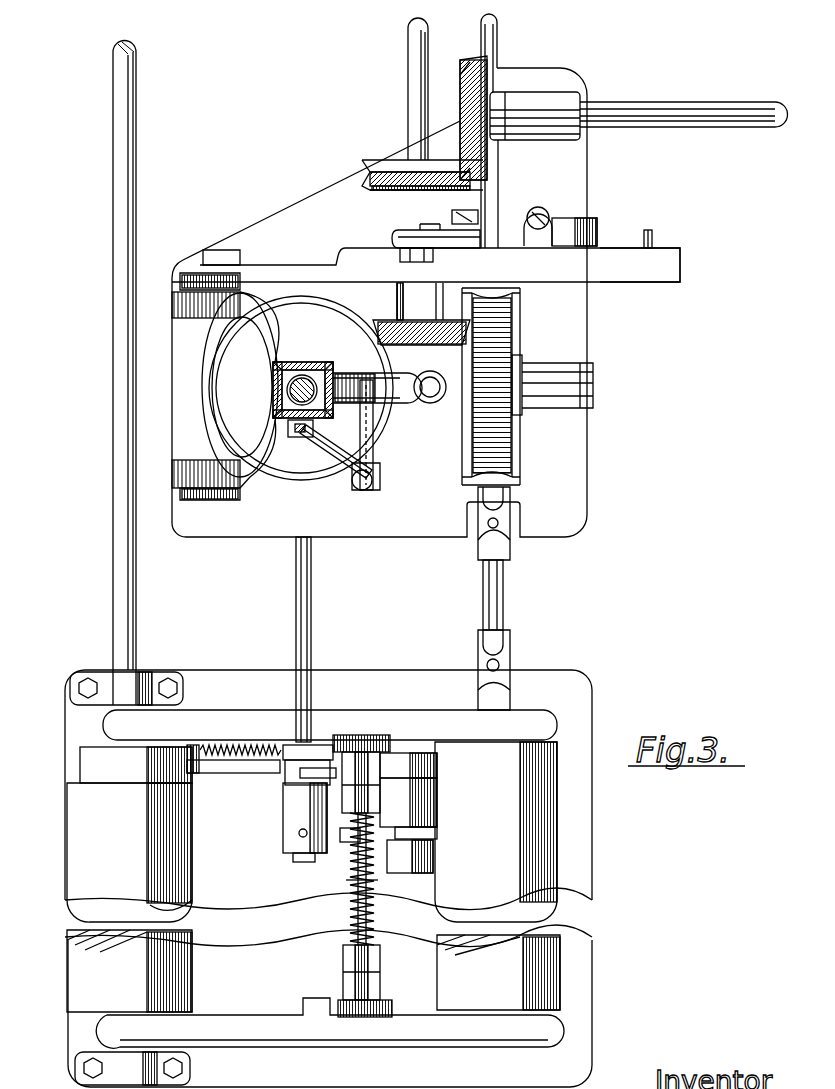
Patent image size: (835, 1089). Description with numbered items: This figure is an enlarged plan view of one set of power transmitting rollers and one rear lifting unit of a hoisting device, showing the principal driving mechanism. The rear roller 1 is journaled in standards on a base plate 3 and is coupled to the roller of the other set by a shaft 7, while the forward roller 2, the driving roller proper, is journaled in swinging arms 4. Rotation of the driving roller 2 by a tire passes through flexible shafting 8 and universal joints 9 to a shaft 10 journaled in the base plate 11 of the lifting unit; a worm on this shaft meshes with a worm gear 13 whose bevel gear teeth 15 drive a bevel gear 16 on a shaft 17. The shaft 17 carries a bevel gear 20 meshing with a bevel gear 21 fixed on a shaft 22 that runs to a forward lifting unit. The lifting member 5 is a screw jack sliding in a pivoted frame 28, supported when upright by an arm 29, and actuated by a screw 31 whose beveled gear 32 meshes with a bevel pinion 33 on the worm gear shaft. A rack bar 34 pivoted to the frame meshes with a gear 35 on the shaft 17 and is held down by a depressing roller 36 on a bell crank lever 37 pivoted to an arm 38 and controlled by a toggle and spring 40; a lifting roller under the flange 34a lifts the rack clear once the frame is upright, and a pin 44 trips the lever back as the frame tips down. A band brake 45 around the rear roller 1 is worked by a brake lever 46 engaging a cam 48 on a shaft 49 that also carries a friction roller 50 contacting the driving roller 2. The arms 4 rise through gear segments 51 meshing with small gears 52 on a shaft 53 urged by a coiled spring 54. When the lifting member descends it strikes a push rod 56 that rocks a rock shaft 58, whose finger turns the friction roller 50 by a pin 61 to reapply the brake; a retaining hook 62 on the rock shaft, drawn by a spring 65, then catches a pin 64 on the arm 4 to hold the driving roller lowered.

The rear roller 1 is at (105, 873).
The forward roller 2 is at (540, 855).
The base plate 3 is at (580, 990).
The swinging arms 4 is at (410, 720).
The lifting member 5 is at (280, 376).
The shaft 7 is at (113, 282).
The flexible shafting 8 is at (505, 600).
The universal joints 9 is at (510, 535).
The shaft 10 is at (497, 45).
The base plate 11 is at (565, 335).
The worm gear 13 is at (518, 450).
The bevel gear teeth 15 is at (470, 425).
The bevel gear 16 is at (378, 330).
The shaft 17 is at (405, 58).
The bevel gear 20 is at (410, 150).
The bevel gear 21 is at (432, 117).
The shaft 22 is at (711, 110).
The pivoted frame 28 is at (230, 305).
The arm 29 is at (418, 408).
The screw 31 is at (275, 400).
The beveled gear 32 is at (235, 378).
The bevel pinion 33 is at (388, 440).
The rack bar 34 is at (605, 268).
The flange 34a is at (655, 250).
The gear 35 is at (372, 290).
The depressing roller 36 is at (436, 258).
The bell crank lever 37 is at (440, 240).
The arm 38 is at (470, 212).
The spring 40 is at (585, 218).
The pin 44 is at (655, 235).
The band brake 45 is at (129, 879).
The brake lever 46 is at (235, 765).
The cam 48 is at (408, 767).
The shaft 49 is at (430, 830).
The friction roller 50 is at (400, 810).
The gear segments 51 is at (330, 738).
The small gears 52 is at (370, 740).
The shaft 53 is at (370, 880).
The spring 54 is at (345, 888).
The push rod 56 is at (332, 470).
The rock shaft 58 is at (298, 598).
The pin 61 is at (412, 850).
The retaining hook 62 is at (297, 750).
The pin 64 is at (312, 770).
The spring 65 is at (238, 745).